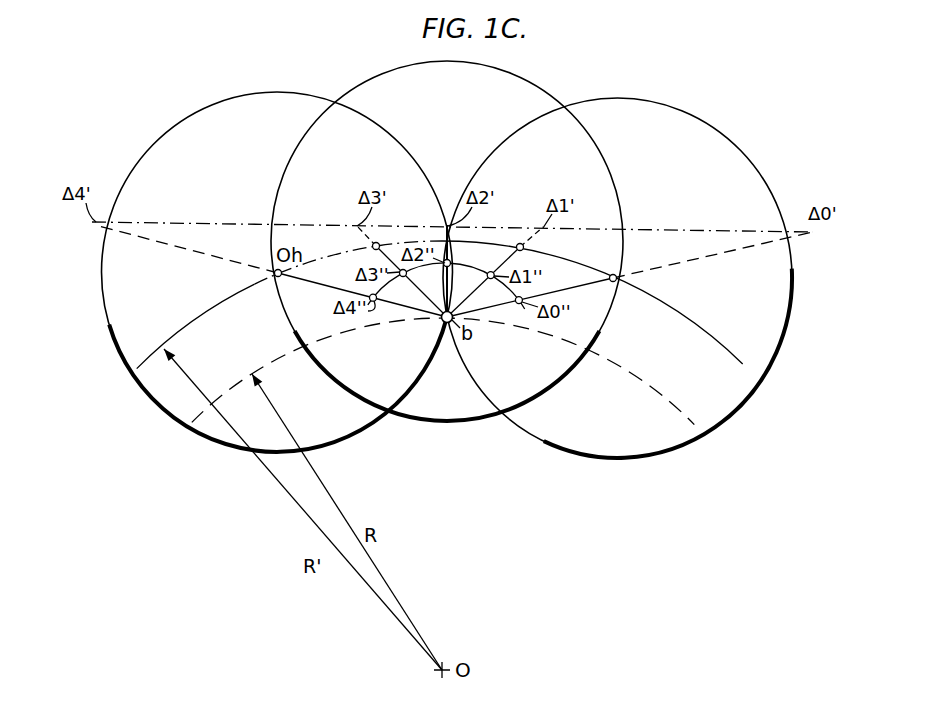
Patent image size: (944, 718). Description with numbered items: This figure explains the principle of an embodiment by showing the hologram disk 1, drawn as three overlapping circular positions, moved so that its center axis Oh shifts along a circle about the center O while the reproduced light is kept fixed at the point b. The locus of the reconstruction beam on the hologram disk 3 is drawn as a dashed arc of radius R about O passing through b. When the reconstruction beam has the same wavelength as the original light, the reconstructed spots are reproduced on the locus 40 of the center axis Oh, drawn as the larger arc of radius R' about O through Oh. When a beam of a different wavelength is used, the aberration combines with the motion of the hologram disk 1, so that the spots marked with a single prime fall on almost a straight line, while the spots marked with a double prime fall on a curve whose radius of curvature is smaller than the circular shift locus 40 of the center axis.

The hologram disk 1 is at (348, 92).
The locus of the reconstruction beam on the hologram disk 3 is at (684, 414).
The locus of the center axis Oh 40 is at (729, 349).